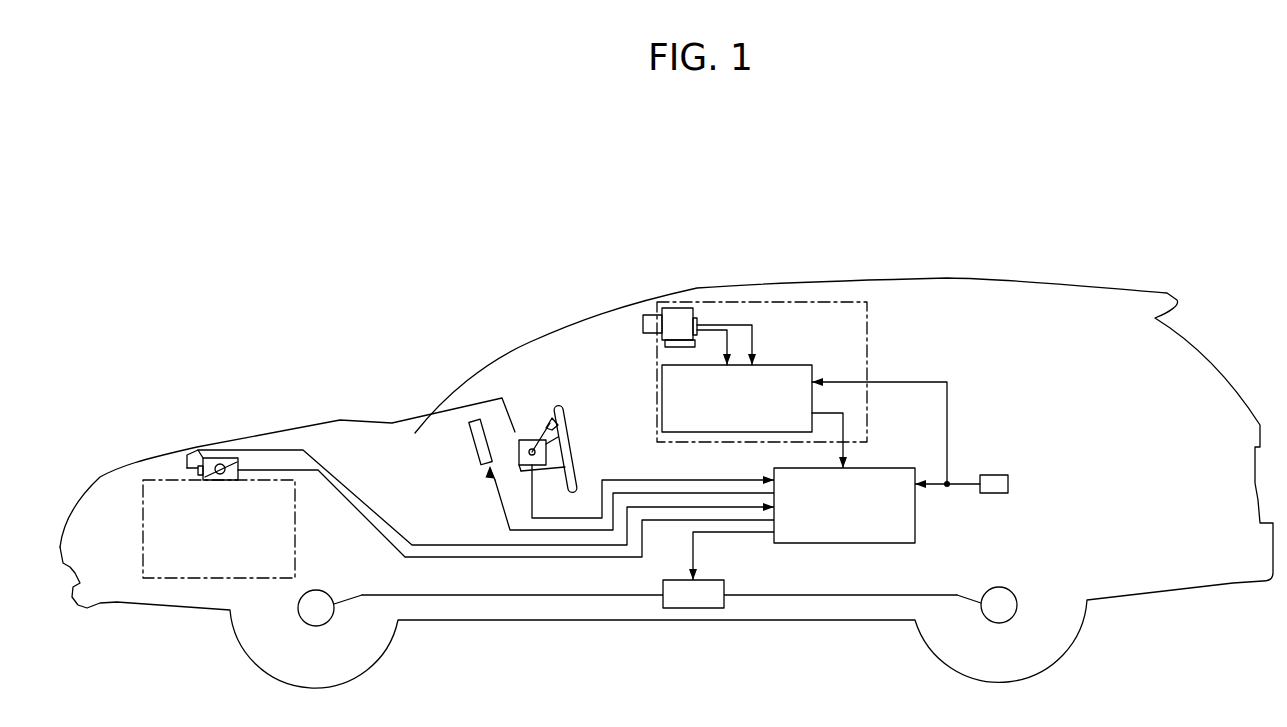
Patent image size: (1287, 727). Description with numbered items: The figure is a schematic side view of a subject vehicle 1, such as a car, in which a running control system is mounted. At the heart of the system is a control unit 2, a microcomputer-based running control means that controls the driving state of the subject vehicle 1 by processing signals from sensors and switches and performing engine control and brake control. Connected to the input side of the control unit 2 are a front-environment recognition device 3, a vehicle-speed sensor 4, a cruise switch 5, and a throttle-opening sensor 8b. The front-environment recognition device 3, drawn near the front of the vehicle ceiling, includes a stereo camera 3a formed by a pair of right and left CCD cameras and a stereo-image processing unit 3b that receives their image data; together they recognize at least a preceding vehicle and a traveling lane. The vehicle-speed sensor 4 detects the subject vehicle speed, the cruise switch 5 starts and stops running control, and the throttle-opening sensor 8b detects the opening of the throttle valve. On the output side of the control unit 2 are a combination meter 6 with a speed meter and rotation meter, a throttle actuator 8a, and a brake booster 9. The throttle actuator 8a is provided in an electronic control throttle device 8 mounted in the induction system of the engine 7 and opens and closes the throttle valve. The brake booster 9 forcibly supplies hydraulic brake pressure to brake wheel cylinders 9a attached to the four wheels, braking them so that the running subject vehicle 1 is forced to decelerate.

The subject vehicle 1 is at (995, 268).
The control unit 2 is at (880, 468).
The front-environment recognition device 3 is at (788, 297).
The stereo camera 3a is at (672, 318).
The stereo-image processing unit 3b is at (773, 364).
The vehicle-speed sensor 4 is at (1008, 484).
The cruise switch 5 is at (532, 449).
The combination meter 6 is at (470, 415).
The engine 7 is at (295, 532).
The electronic control throttle device 8 is at (203, 450).
The throttle actuator 8a is at (225, 460).
The throttle-opening sensor 8b is at (198, 473).
The brake booster 9 is at (682, 580).
The brake wheel cylinders 9a is at (309, 627).